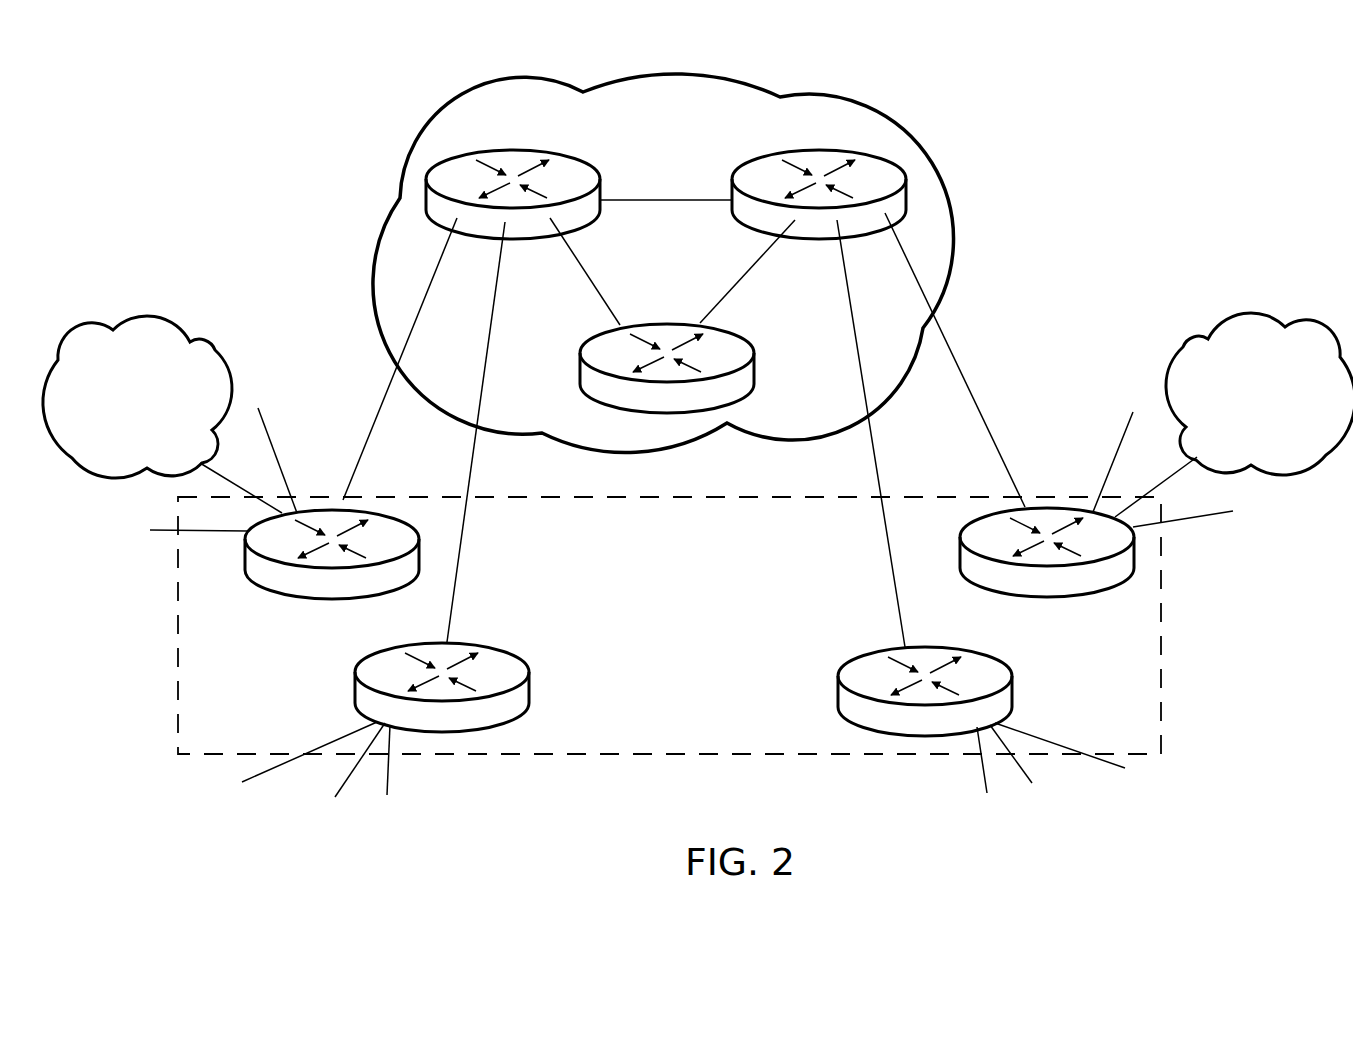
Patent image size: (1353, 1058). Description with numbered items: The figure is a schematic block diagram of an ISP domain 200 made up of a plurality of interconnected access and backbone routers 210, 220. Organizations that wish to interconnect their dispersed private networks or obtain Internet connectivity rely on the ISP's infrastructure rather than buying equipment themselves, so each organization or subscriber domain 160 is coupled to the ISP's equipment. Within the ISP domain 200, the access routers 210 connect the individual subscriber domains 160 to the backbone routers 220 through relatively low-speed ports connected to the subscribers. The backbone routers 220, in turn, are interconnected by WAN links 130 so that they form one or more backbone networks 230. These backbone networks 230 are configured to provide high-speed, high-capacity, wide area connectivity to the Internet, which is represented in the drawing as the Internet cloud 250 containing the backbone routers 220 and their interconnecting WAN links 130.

The WAN link 130 is at (670, 199).
The organization domain 160 is at (698, 395).
The ISP domain 200 is at (669, 625).
The access router 210 is at (373, 595).
The backbone router 220 is at (533, 149).
The backbone network 230 is at (672, 276).
The Internet cloud 250 is at (663, 263).